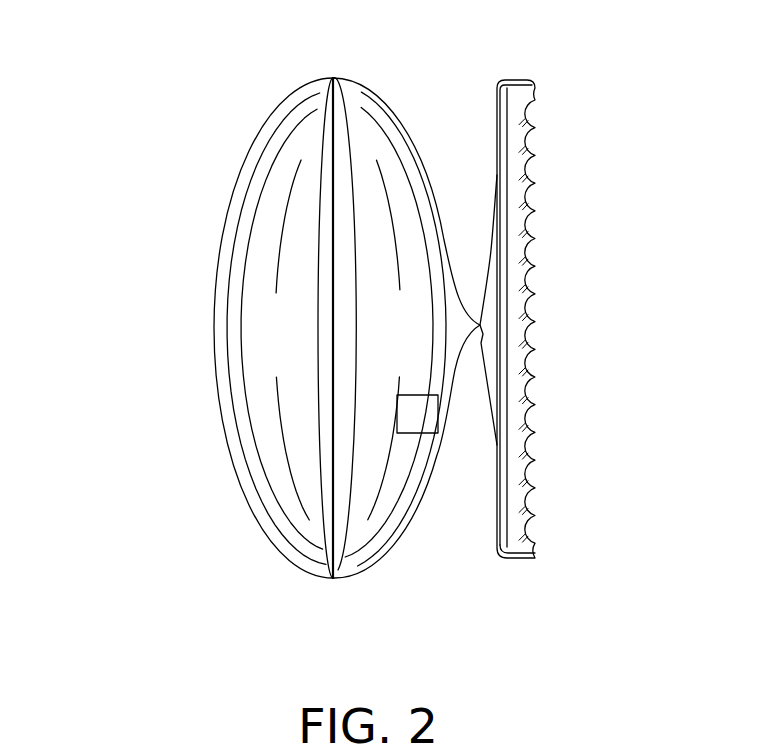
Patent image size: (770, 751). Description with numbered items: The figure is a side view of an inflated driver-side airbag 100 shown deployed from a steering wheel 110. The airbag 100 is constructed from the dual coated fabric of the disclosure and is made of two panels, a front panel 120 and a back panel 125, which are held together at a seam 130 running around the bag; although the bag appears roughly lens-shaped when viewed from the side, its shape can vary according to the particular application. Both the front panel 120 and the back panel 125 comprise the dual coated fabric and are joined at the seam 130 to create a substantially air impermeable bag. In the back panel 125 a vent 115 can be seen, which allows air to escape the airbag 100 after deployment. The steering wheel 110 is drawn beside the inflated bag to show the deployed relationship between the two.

The driver-side airbag 100 is at (212, 153).
The steering wheel 110 is at (547, 84).
The vent 115 is at (420, 405).
The front panel 120 is at (243, 433).
The back panel 125 is at (393, 502).
The seam 130 is at (332, 578).